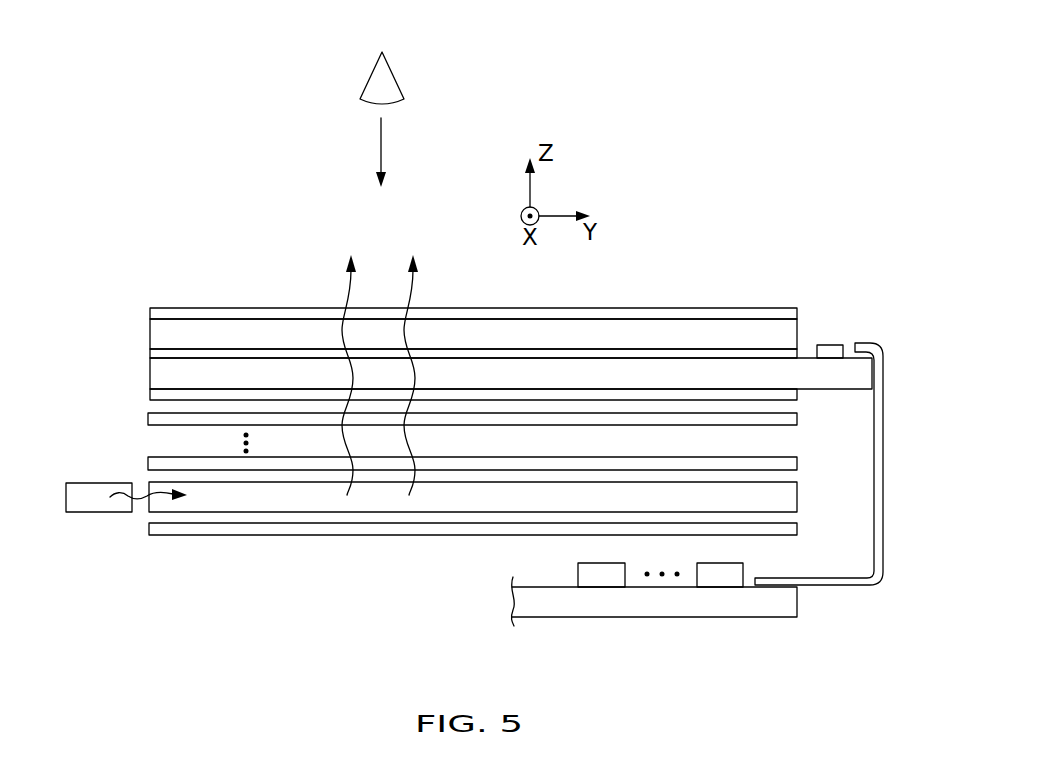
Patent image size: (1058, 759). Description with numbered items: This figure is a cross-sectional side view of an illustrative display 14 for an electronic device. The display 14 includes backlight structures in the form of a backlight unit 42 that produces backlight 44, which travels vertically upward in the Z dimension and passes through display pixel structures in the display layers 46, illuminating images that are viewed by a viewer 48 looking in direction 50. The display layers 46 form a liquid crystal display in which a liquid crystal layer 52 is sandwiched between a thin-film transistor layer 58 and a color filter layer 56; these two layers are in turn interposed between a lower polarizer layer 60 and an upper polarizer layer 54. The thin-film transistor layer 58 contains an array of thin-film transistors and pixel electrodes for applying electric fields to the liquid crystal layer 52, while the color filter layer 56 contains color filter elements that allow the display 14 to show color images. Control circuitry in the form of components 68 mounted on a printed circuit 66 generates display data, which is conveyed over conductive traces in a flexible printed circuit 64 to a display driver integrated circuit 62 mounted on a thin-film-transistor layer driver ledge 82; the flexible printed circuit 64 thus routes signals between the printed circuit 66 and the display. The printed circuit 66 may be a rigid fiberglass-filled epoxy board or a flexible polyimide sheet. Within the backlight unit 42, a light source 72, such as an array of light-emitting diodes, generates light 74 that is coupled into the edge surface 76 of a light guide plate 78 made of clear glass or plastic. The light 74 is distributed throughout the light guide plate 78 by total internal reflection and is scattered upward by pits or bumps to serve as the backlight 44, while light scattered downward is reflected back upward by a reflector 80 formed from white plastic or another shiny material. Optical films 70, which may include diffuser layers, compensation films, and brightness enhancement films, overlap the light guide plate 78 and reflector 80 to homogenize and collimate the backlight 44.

The display 14 is at (822, 130).
The backlight unit 42 is at (471, 495).
The backlight 44 is at (414, 295).
The display layers 46 is at (480, 330).
The viewer 48 is at (392, 74).
The direction 50 is at (381, 153).
The liquid crystal layer 52 is at (273, 353).
The upper polarizer layer 54 is at (255, 310).
The color filter layer 56 is at (172, 330).
The thin-film transistor layer 58 is at (207, 367).
The lower polarizer layer 60 is at (165, 395).
The display driver integrated circuit 62 is at (812, 333).
The flexible printed circuit 64 is at (884, 402).
The printed circuit 66 is at (660, 610).
The components 68 is at (708, 563).
The optical films 70 is at (162, 427).
The light source 72 is at (83, 512).
The light 74 is at (142, 500).
The edge surface 76 is at (138, 498).
The light guide plate 78 is at (247, 497).
The reflector 80 is at (326, 537).
The thin-film-transistor layer driver ledge 82 is at (870, 326).